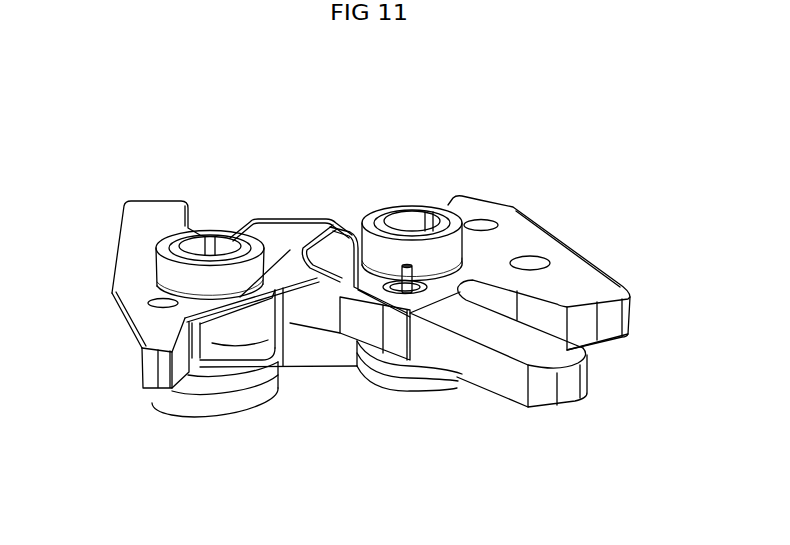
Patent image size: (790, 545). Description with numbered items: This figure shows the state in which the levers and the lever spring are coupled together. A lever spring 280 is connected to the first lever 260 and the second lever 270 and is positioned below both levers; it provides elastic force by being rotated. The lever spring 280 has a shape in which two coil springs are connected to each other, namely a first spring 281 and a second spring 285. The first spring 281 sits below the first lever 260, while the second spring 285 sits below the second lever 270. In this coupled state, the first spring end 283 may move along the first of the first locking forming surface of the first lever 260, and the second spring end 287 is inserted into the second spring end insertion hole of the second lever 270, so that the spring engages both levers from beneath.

The first lever 260 is at (220, 178).
The second lever 270 is at (433, 175).
The lever spring 280 is at (329, 414).
The first spring 281 is at (218, 398).
The first spring end 283 is at (279, 290).
The second spring 285 is at (408, 378).
The second spring end 287 is at (405, 264).